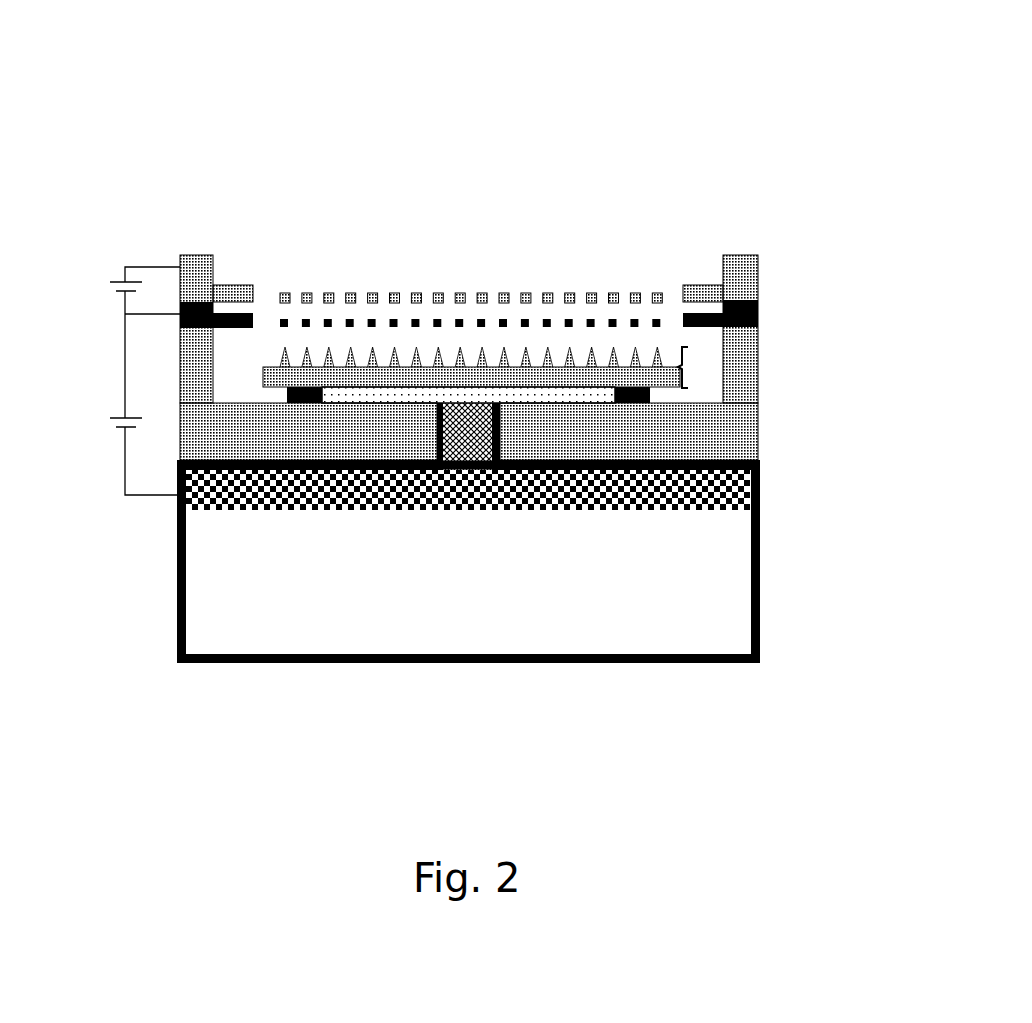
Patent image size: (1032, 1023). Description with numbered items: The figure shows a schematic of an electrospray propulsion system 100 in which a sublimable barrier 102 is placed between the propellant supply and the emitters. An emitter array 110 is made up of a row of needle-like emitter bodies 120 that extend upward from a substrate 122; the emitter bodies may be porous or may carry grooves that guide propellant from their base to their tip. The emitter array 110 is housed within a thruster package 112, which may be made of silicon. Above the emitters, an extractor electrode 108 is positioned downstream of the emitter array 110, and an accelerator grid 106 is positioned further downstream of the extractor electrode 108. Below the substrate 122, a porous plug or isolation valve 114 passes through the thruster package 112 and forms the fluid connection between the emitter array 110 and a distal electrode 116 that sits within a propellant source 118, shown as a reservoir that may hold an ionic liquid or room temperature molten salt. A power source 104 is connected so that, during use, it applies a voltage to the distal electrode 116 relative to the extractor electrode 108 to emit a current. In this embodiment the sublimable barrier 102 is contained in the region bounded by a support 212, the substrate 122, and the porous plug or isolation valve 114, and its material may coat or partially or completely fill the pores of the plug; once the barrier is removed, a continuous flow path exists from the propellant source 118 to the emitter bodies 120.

The electrospray device 100 is at (624, 96).
The sublimable barrier 102 is at (525, 395).
The power source 104 is at (120, 417).
The accelerator grid 106 is at (743, 270).
The extractor electrode 108 is at (758, 312).
The emitter array 110 is at (600, 310).
The thruster package 112 is at (735, 447).
The porous plug or isolation valve 114 is at (473, 448).
The distal electrode 116 is at (447, 510).
The propellant source 118 is at (725, 641).
The emitter bodies 120 is at (637, 367).
The substrate 122 is at (400, 377).
The support 212 is at (298, 405).